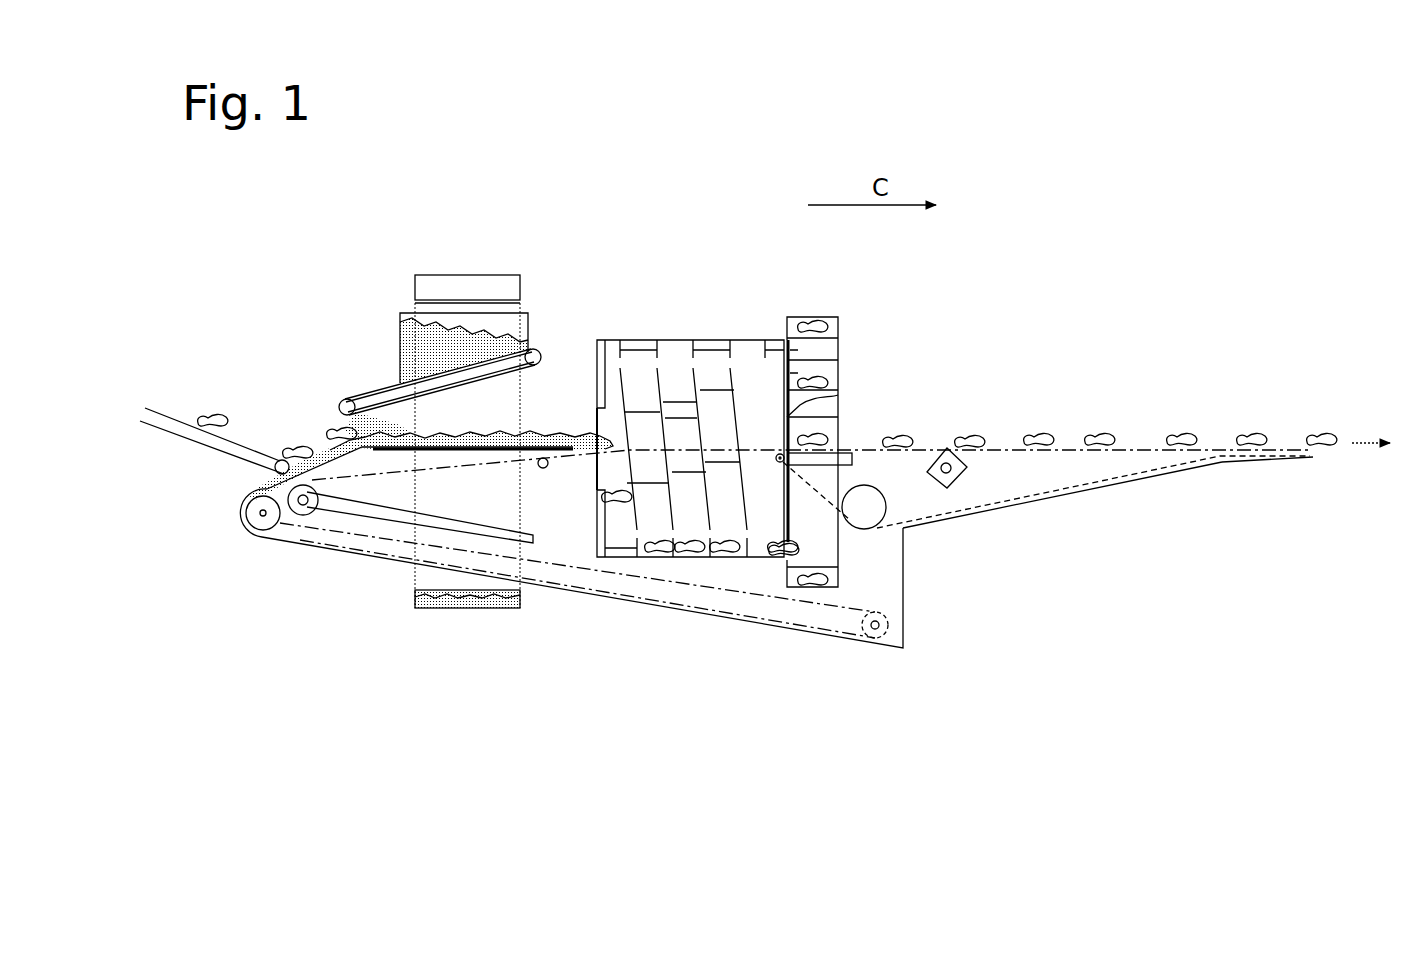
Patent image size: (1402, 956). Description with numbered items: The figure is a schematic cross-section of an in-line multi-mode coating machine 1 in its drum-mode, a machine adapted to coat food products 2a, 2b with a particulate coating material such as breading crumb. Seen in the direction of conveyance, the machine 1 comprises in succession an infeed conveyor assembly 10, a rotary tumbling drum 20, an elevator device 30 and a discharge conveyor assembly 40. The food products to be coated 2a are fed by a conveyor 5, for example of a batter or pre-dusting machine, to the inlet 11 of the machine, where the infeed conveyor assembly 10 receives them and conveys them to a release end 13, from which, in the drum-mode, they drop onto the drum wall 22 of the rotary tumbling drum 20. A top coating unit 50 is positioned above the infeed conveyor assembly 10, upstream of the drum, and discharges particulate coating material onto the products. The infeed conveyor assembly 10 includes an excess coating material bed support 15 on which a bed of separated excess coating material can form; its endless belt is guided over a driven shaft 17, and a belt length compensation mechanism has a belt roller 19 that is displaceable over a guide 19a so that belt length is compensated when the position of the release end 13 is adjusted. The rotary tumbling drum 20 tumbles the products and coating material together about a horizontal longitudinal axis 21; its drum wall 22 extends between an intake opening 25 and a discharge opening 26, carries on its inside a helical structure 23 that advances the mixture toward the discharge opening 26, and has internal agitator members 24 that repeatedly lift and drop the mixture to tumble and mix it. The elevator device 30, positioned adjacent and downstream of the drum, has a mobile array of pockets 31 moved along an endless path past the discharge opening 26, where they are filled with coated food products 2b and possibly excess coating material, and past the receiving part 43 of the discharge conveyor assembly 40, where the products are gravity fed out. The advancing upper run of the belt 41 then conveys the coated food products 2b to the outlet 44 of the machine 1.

The in-line multi-mode coating machine 1 is at (660, 244).
The food products to be coated 2a is at (340, 430).
The coated food products 2b is at (823, 378).
The conveyor 5 is at (214, 440).
The infeed conveyor assembly 10 is at (393, 459).
The inlet 11 is at (334, 338).
The release end 13 is at (585, 460).
The excess coating material bed support 15 is at (577, 543).
The shaft 17 is at (260, 513).
The belt roller 19 is at (298, 509).
The guide 19a is at (392, 518).
The rotary tumbling drum 20 is at (696, 329).
The longitudinal axis 21 is at (630, 448).
The drum wall 22 is at (655, 337).
The helical structure 23 is at (698, 423).
The internal agitator members 24 is at (713, 463).
The intake opening 25 is at (586, 421).
The discharge opening 26 is at (788, 417).
The elevator device 30 is at (806, 303).
The mobile array of pockets 31 is at (791, 352).
The discharge conveyor assembly 40 is at (933, 428).
The upper run of the belt 41 is at (1000, 450).
The receiving part 43 is at (838, 435).
The outlet 44 is at (1283, 438).
The top coating unit 50 is at (448, 254).